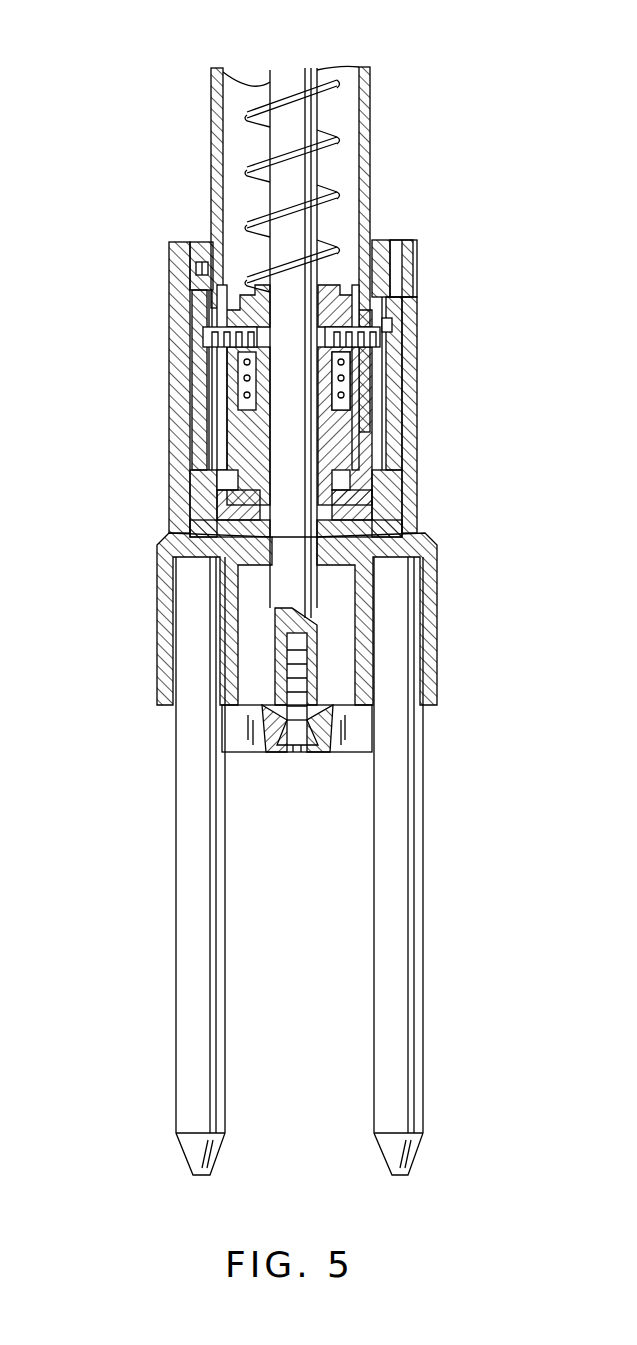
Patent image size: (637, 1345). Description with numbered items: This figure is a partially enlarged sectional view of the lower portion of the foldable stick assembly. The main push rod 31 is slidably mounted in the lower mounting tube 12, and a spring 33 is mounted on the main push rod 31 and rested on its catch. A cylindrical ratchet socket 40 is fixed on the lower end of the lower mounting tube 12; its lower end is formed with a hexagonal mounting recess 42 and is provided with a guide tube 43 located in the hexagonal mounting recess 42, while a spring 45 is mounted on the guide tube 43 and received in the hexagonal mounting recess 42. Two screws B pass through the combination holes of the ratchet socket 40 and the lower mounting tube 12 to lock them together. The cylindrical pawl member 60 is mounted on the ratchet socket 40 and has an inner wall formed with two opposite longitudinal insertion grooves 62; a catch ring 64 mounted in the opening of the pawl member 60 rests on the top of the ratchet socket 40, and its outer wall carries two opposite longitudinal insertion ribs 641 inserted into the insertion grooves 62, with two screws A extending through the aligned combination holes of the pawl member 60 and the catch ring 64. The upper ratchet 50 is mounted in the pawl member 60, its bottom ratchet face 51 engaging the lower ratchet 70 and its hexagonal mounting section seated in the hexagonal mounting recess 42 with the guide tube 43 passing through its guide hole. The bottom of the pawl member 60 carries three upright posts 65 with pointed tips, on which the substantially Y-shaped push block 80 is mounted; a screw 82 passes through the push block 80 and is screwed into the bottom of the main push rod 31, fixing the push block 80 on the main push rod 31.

The lower mounting tube 12 is at (212, 122).
The main push rod 31 is at (288, 80).
The spring 33 is at (320, 73).
The ratchet socket 40 is at (383, 428).
The hexagonal mounting recess 42 is at (342, 387).
The guide tube 43 is at (275, 567).
The spring 45 is at (225, 386).
The upper ratchet 50 is at (217, 495).
The ratchet face 51 is at (217, 512).
The pawl member 60 is at (405, 487).
The longitudinal insertion grooves 62 is at (453, 260).
The catch ring 64 is at (381, 240).
The longitudinal insertion ribs 641 is at (398, 243).
The upright posts 65 is at (386, 960).
The lower ratchet 70 is at (367, 522).
The push block 80 is at (335, 752).
The screw 82 is at (272, 752).
The screws A is at (170, 263).
The screws B is at (383, 330).